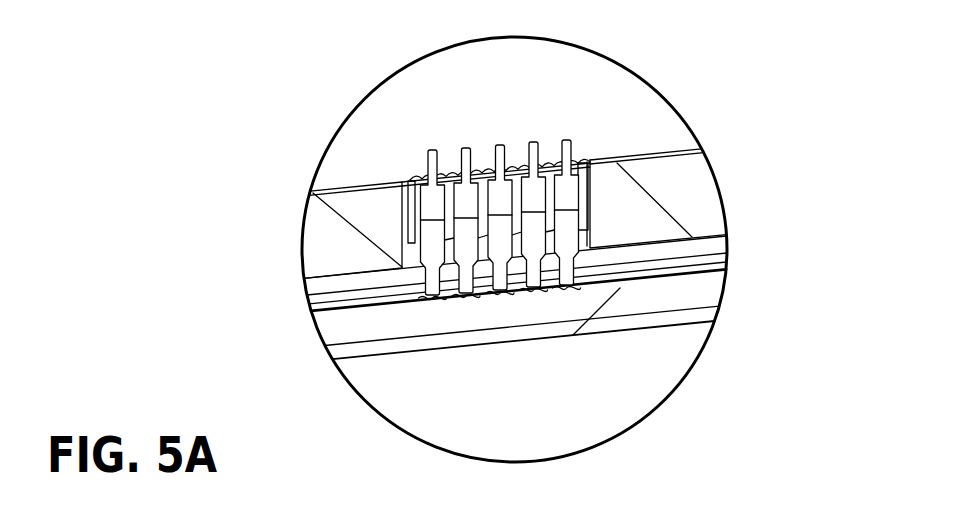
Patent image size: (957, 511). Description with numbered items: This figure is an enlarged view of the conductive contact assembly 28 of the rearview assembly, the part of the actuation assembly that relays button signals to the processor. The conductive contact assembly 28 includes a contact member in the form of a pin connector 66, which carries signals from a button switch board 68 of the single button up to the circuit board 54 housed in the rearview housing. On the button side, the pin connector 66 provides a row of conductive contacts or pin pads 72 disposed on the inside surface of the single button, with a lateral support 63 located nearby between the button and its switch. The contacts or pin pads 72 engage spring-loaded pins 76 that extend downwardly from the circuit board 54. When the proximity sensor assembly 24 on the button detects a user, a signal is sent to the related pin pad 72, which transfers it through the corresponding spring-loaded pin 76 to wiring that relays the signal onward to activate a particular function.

The proximity sensor assembly 24 is at (595, 333).
The conductive contact assembly 28 is at (628, 144).
The circuit board 54 is at (543, 86).
The lateral support 63 is at (680, 198).
The pin connector 66 is at (592, 158).
The button switch board 68 is at (652, 268).
The contacts or pin pads 72 is at (493, 292).
The spring-loaded pins 76 is at (566, 140).